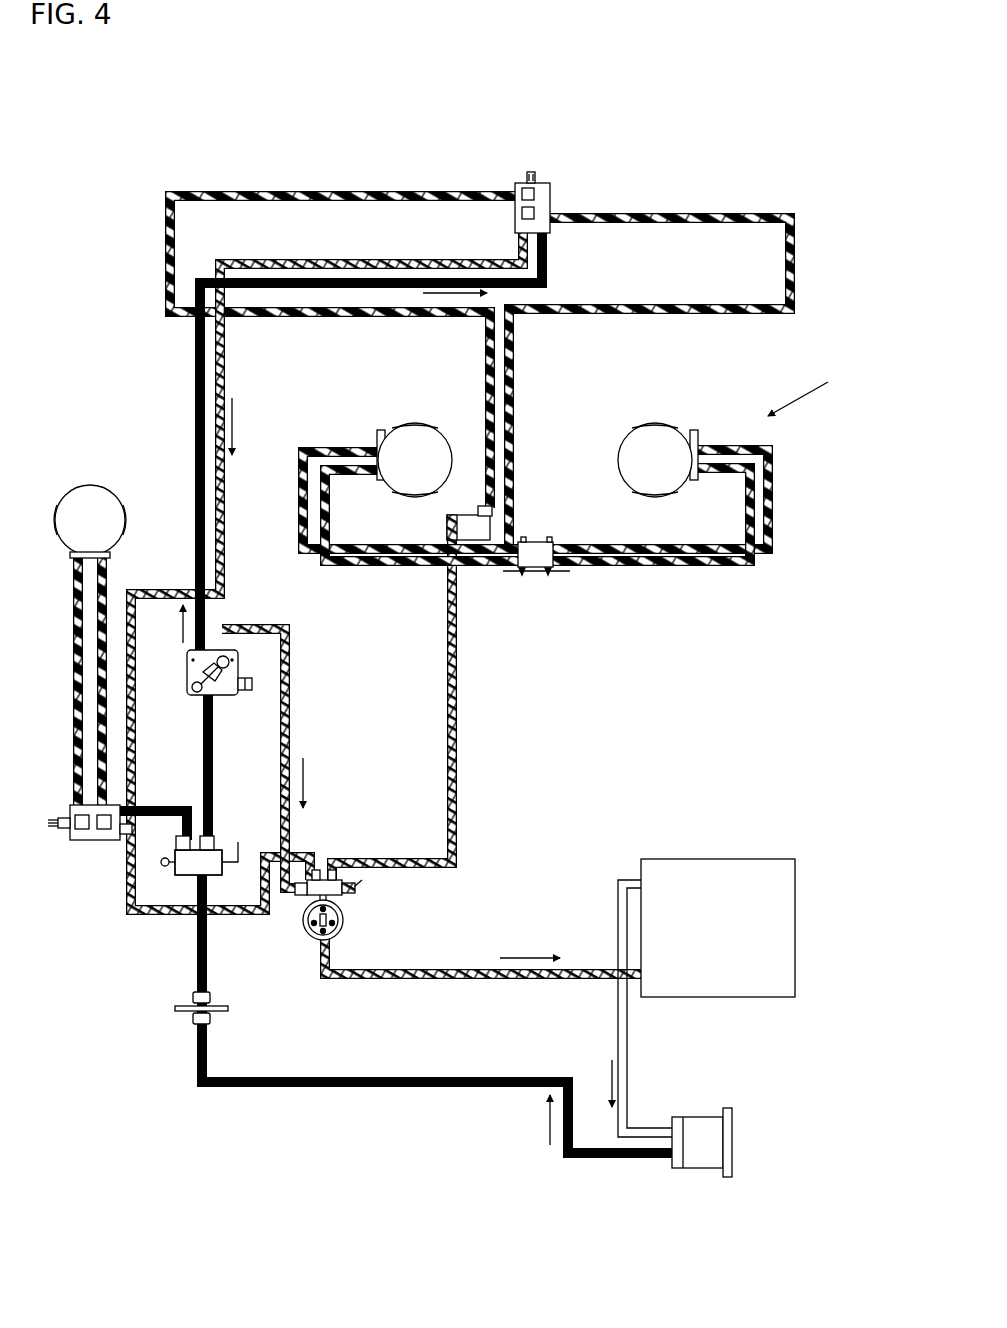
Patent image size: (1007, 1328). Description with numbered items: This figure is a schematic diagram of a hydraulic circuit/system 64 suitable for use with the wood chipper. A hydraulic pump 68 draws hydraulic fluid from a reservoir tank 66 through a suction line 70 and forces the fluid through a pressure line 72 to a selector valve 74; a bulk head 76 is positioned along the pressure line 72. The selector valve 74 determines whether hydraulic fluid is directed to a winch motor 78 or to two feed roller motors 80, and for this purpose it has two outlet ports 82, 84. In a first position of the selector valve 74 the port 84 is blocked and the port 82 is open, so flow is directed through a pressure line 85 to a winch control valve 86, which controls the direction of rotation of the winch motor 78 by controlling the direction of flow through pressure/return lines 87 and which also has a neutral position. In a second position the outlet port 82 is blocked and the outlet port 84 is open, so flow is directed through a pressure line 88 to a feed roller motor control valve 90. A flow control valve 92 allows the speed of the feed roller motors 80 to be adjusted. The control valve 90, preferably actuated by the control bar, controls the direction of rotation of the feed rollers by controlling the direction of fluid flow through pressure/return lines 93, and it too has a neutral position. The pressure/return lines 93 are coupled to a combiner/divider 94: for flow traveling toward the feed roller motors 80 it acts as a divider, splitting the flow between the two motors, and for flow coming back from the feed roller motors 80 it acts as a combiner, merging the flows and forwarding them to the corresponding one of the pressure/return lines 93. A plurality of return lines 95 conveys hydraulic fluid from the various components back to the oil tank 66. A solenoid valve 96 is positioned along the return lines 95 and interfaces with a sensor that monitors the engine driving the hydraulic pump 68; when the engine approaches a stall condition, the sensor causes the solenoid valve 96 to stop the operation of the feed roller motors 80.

The hydraulic circuit/system 64 is at (808, 387).
The reservoir tank 66 is at (793, 900).
The hydraulic pump 68 is at (732, 1147).
The suction line 70 is at (628, 1052).
The pressure line 72 is at (295, 1090).
The selector valve 74 is at (185, 877).
The bulk head 76 is at (175, 1008).
The winch motor 78 is at (72, 558).
The feed roller motors 80 is at (380, 430).
The outlet port 82 is at (180, 840).
The outlet port 84 is at (215, 838).
The pressure line 85 is at (153, 807).
The winch control valve 86 is at (72, 838).
The pressure/return lines 87 is at (102, 597).
The pressure line 88 is at (213, 750).
The feed roller motor control valve 90 is at (548, 186).
The flow control valve 92 is at (188, 690).
The pressure/return lines 93 is at (313, 318).
The combiner/divider 94 is at (533, 540).
The return lines 95 is at (227, 516).
The solenoid valve 96 is at (338, 895).